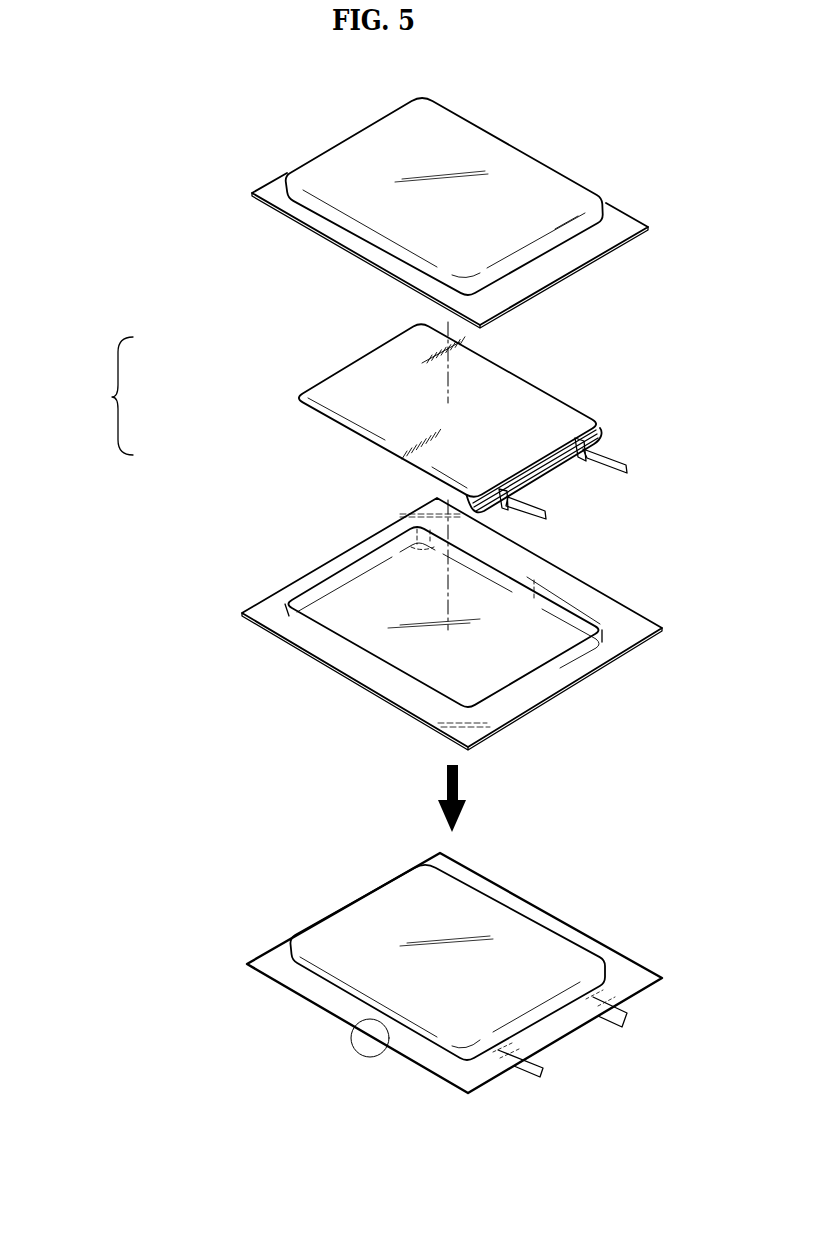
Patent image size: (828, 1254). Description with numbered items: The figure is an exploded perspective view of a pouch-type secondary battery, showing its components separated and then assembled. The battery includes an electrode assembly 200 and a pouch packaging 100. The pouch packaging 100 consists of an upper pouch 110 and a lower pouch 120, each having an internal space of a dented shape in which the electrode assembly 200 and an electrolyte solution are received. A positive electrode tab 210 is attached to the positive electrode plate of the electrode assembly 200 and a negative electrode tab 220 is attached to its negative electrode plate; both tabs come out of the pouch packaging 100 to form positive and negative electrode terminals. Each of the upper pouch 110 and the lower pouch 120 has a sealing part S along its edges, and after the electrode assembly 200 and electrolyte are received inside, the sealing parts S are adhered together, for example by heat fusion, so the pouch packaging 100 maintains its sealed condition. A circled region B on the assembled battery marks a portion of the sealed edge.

The pouch packaging 100 is at (620, 922).
The upper pouch 110 is at (267, 213).
The lower pouch 120 is at (255, 605).
The electrode assembly 200 is at (552, 376).
The positive electrode tab 210 is at (627, 465).
The negative electrode tab 220 is at (541, 511).
The sealing part S is at (352, 247).
The region B is at (357, 1058).